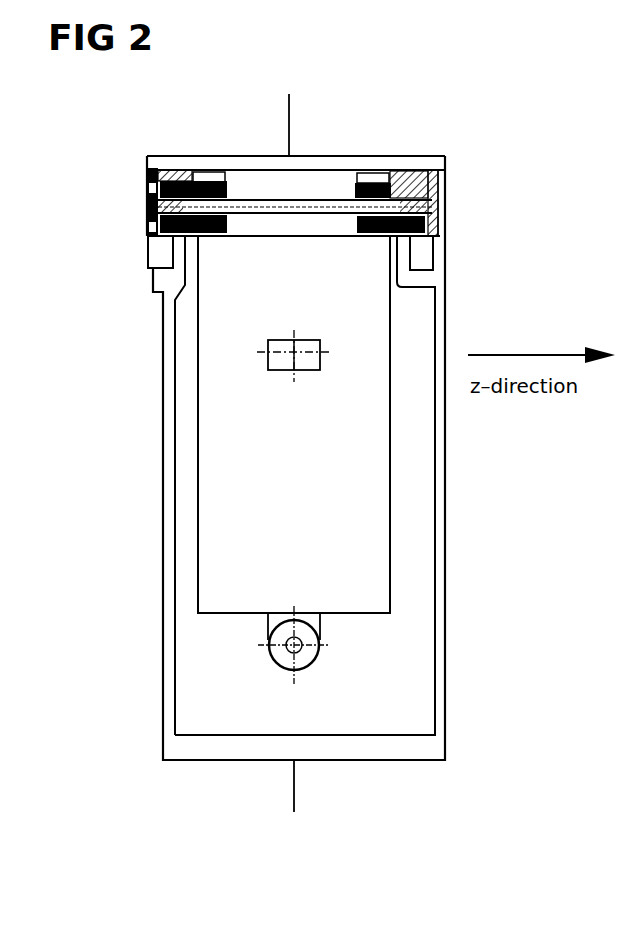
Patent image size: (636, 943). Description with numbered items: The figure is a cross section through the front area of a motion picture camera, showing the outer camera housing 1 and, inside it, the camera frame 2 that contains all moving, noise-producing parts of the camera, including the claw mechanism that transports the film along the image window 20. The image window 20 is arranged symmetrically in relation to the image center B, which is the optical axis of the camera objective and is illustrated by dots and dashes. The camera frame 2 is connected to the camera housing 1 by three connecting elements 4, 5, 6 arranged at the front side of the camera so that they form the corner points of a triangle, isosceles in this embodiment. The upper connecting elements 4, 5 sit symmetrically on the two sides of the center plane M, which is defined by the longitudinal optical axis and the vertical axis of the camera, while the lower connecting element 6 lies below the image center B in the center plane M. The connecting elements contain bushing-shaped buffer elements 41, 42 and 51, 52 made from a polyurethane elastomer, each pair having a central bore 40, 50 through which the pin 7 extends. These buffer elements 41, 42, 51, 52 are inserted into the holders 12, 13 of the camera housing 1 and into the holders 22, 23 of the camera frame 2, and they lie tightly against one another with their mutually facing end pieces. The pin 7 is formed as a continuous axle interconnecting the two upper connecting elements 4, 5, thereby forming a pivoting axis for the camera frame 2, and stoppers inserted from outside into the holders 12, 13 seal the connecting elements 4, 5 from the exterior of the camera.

The camera housing 1 is at (447, 505).
The camera frame 2 is at (392, 338).
The upper connecting element 4 is at (183, 140).
The upper connecting element 5 is at (411, 146).
The lower connecting element 6 is at (270, 655).
The pin 7 is at (279, 202).
The holder of the camera housing 12 is at (163, 257).
The holder of the camera housing 13 is at (423, 258).
The image window 20 is at (304, 362).
The holder of the camera frame 22 is at (205, 245).
The holder of the camera frame 23 is at (364, 245).
The central bore 40 is at (148, 207).
The buffer element 41 is at (156, 173).
The buffer element 42 is at (210, 240).
The central bore 50 is at (432, 207).
The buffer element 51 is at (432, 188).
The buffer element 52 is at (355, 247).
The image center B is at (287, 360).
The center plane M is at (290, 456).